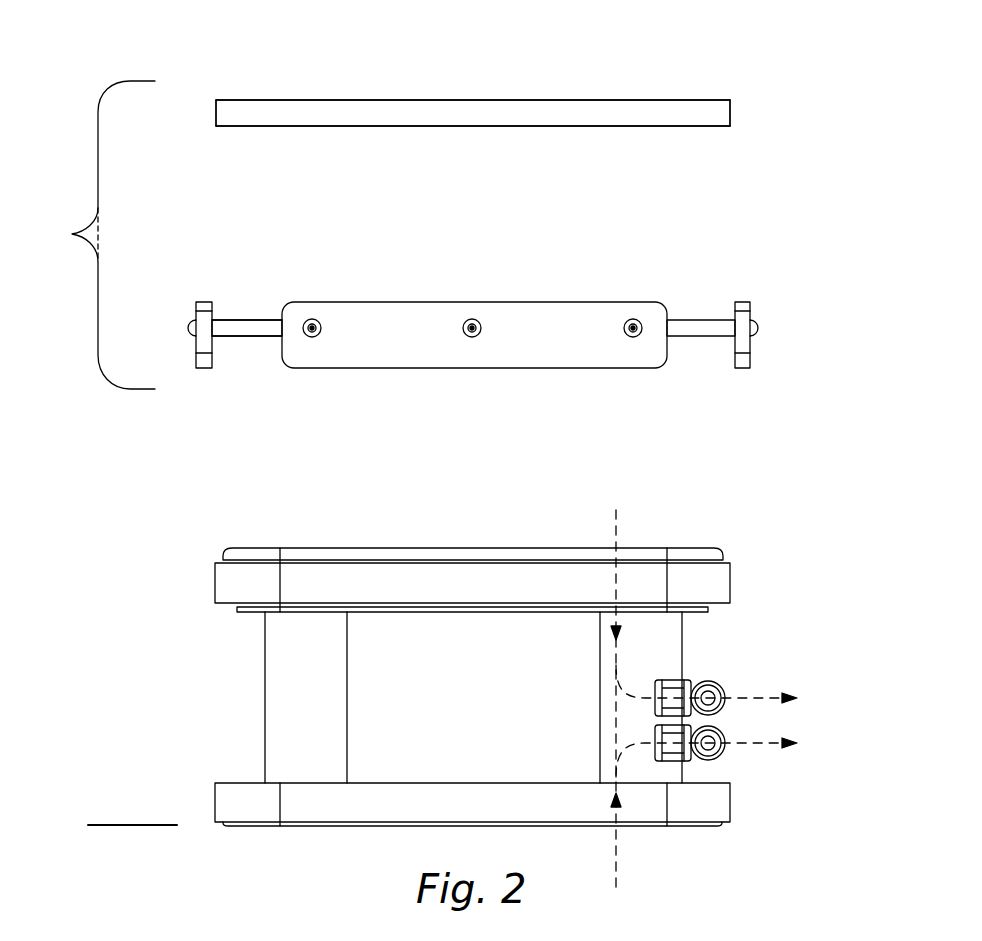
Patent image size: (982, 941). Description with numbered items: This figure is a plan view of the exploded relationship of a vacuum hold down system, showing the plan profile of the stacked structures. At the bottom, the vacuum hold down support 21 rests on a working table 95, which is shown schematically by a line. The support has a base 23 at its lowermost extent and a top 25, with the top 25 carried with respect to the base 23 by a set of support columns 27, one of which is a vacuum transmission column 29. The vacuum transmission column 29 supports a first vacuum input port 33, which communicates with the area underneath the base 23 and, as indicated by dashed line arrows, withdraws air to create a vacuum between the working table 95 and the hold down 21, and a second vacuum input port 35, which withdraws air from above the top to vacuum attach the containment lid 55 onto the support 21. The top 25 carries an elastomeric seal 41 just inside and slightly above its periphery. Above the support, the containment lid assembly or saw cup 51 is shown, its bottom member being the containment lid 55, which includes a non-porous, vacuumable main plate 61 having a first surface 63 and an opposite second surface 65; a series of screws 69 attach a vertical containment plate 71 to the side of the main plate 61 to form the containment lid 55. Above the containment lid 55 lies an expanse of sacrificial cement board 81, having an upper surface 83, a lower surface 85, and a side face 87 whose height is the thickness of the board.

The vacuum hold down support 21 is at (247, 670).
The base 23 is at (732, 803).
The top 25 is at (732, 580).
The support columns 27 is at (330, 668).
The vacuum transmission column 29 is at (665, 640).
The first vacuum input port 33 is at (703, 755).
The second vacuum input port 35 is at (703, 680).
The elastomeric seal 41 is at (710, 550).
The containment lid assembly (saw cup) 51 is at (72, 233).
The containment lid 55 is at (428, 290).
The main plate 61 is at (236, 346).
The first surface 63 is at (257, 320).
The second surface 65 is at (250, 338).
The screws 69 is at (193, 327).
The vertical containment plate 71 is at (201, 302).
The cement board 81 is at (328, 84).
The upper surface 83 is at (530, 100).
The lower surface 85 is at (588, 126).
The side face 87 is at (216, 112).
The working table 95 is at (122, 825).